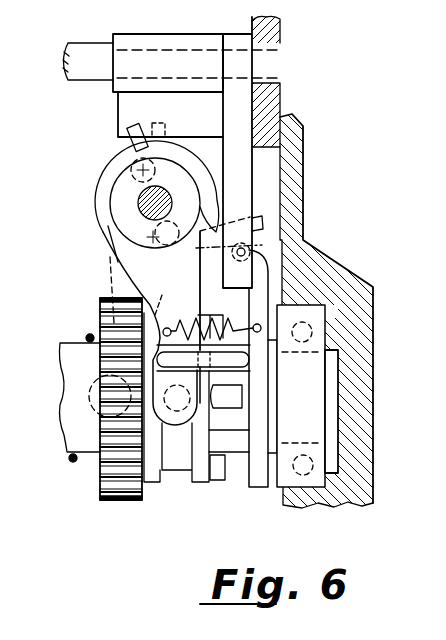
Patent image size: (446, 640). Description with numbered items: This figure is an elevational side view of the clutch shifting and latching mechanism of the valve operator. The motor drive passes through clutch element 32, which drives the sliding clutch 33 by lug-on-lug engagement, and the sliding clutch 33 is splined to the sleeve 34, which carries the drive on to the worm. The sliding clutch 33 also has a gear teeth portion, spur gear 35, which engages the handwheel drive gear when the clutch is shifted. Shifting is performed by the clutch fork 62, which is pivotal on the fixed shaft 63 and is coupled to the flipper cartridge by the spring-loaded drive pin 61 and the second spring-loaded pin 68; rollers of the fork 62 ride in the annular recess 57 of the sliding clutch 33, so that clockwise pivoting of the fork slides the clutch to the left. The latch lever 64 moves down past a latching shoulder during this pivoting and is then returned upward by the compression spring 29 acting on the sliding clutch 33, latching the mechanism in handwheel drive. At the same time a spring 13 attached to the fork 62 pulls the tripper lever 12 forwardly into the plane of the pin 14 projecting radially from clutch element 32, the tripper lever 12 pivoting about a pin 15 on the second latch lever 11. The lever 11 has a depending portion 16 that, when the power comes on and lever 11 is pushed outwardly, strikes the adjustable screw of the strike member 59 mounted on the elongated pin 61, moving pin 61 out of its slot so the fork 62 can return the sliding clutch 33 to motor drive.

The latch lever 11 is at (148, 45).
The tripper lever 12 is at (259, 490).
The spring 13 is at (172, 316).
The pin 14 is at (232, 393).
The pin 15 is at (252, 250).
The depending portion 16 is at (130, 103).
The compression spring 29 is at (73, 463).
The clutch element 32 is at (220, 440).
The sliding clutch 33 is at (156, 472).
The sleeve 34 is at (72, 360).
The spur gear 35 is at (115, 477).
The annular recess 57 is at (180, 460).
The strike member 59 is at (123, 139).
The drive pin 61 is at (115, 173).
The clutch fork 62 is at (148, 266).
The fixed shaft 63 is at (138, 199).
The latch lever 64 is at (302, 187).
The pin 68 is at (113, 231).